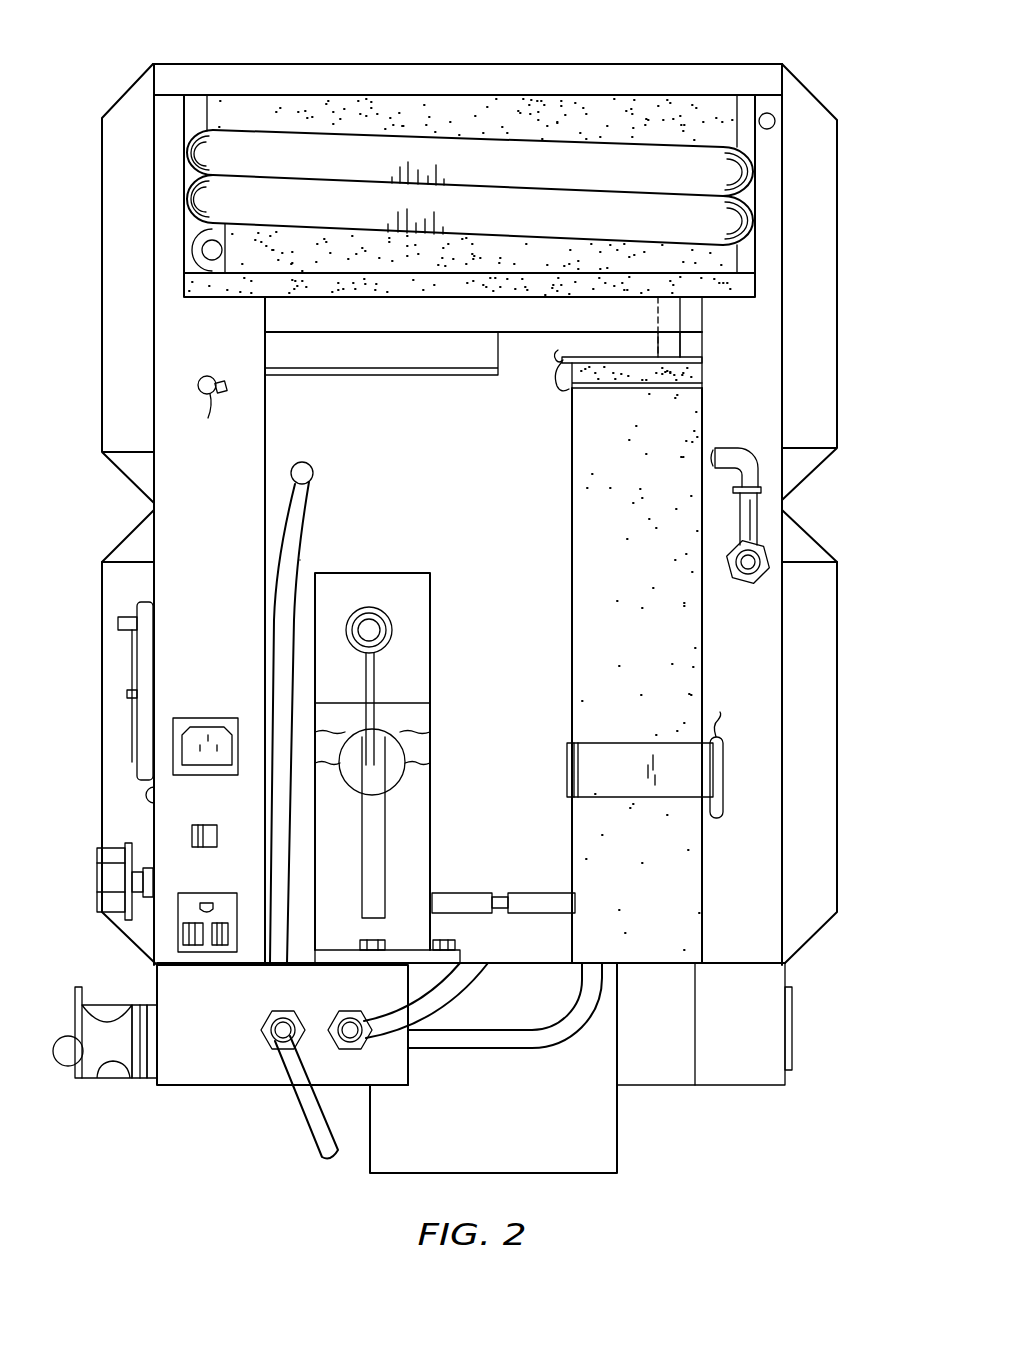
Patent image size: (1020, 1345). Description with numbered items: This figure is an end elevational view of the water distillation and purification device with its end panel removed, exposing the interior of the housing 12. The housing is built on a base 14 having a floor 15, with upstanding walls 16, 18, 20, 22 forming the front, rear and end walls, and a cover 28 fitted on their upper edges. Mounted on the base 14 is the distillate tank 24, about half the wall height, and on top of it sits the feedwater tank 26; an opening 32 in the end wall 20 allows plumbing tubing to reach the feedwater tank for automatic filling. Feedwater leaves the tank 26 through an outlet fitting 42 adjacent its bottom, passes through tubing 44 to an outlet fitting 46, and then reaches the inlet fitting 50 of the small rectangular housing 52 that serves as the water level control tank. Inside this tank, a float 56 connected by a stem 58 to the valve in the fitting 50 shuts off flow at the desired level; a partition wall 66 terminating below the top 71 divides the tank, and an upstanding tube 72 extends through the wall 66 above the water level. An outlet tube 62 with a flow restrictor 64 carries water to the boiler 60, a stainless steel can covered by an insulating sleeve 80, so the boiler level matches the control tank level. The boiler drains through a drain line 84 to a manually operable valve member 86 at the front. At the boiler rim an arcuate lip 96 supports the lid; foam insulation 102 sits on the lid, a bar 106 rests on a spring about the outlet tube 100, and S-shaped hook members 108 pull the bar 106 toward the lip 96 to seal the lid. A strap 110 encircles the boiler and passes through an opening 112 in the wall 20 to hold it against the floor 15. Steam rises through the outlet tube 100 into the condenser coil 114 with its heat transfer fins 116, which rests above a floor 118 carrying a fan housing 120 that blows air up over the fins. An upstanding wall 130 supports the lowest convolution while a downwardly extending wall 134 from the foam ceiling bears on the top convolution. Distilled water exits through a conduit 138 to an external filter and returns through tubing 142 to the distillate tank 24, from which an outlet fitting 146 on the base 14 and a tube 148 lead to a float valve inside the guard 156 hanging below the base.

The housing 12 is at (188, 477).
The base 14 is at (183, 1058).
The floor 15 is at (532, 965).
The front wall 16 is at (155, 577).
The rear wall 18 is at (785, 825).
The end wall 20 is at (757, 410).
The end wall 22 is at (402, 463).
The distillate tank 24 is at (108, 735).
The feedwater tank 26 is at (105, 298).
The cover 28 is at (488, 64).
The opening 32 is at (775, 118).
The outlet fitting 42 is at (310, 466).
The tubing 44 is at (297, 550).
The outlet fitting 46 is at (270, 1043).
The inlet fitting 50 is at (385, 628).
The housing 52 is at (386, 573).
The float 56 is at (395, 775).
The stem 58 is at (376, 684).
The boiler 60 is at (572, 487).
The outlet tube 62 is at (458, 893).
The flow restrictor 64 is at (498, 897).
The partition wall 66 is at (420, 720).
The top 71 is at (405, 703).
The upstanding tube 72 is at (385, 826).
The insulation sleeve 80 is at (597, 560).
The drain line 84 is at (508, 1040).
The valve member 86 is at (62, 1063).
The lip 96 is at (708, 384).
The outlet tube 100 is at (670, 318).
The foam insulation 102 is at (708, 360).
The bar 106 is at (620, 357).
The S-shaped hook members 108 is at (560, 388).
The strap 110 is at (578, 775).
The opening 112 is at (725, 735).
The condenser coil 114 is at (342, 132).
The heat transfer fins 116 is at (200, 131).
The floor 118 is at (305, 300).
The fan housing 120 is at (412, 352).
The upstanding wall 130 is at (263, 258).
The downwardly extending wall 134 is at (580, 110).
The conduit 138 is at (202, 419).
The tubing 142 is at (748, 462).
The outlet fitting 146 is at (354, 1013).
The tube 148 is at (445, 1000).
The guard 156 is at (607, 1145).